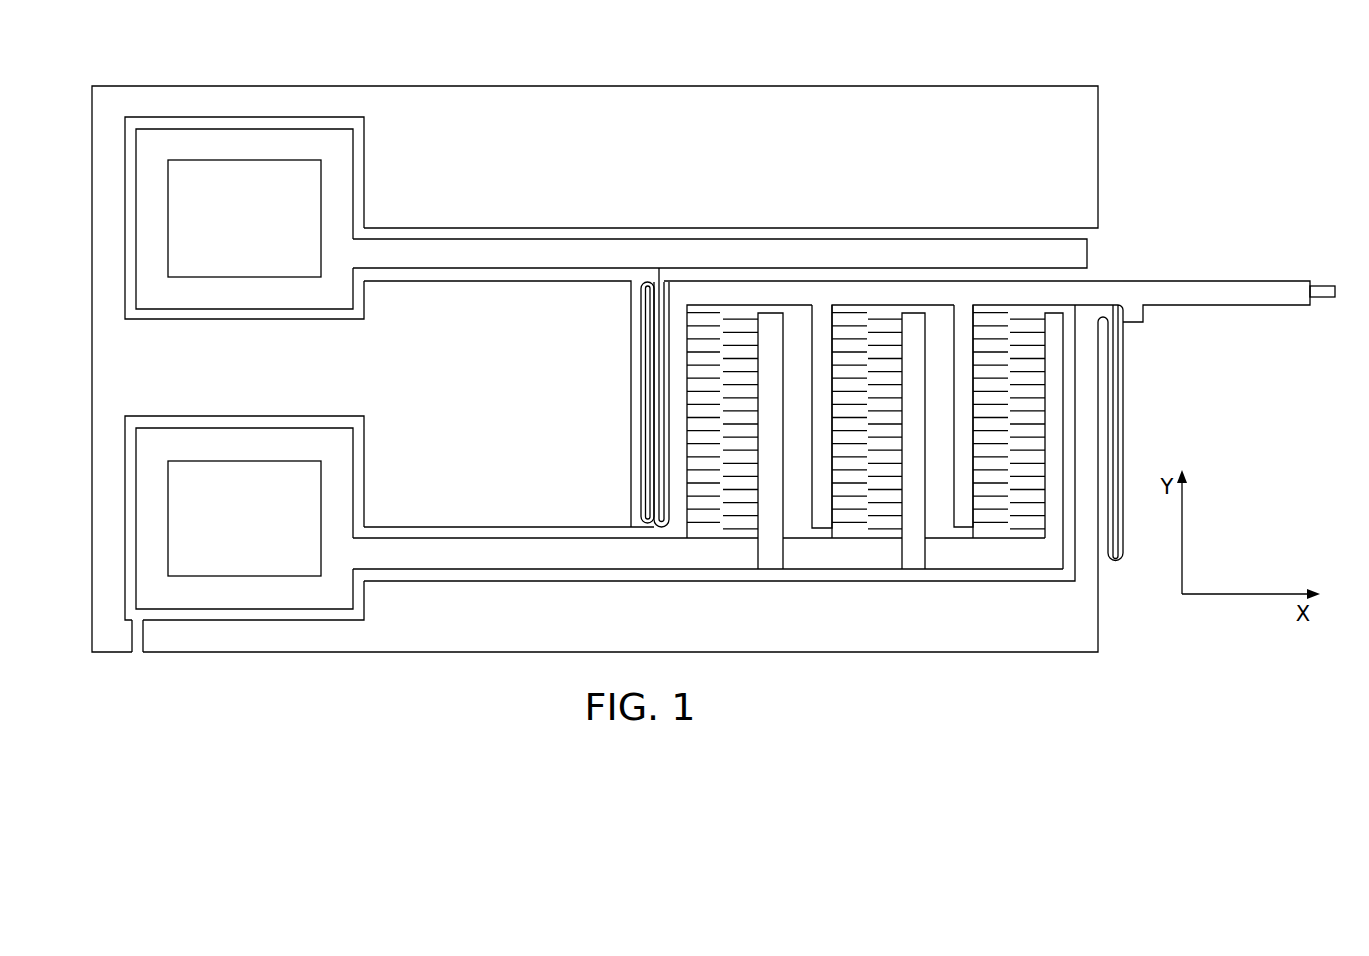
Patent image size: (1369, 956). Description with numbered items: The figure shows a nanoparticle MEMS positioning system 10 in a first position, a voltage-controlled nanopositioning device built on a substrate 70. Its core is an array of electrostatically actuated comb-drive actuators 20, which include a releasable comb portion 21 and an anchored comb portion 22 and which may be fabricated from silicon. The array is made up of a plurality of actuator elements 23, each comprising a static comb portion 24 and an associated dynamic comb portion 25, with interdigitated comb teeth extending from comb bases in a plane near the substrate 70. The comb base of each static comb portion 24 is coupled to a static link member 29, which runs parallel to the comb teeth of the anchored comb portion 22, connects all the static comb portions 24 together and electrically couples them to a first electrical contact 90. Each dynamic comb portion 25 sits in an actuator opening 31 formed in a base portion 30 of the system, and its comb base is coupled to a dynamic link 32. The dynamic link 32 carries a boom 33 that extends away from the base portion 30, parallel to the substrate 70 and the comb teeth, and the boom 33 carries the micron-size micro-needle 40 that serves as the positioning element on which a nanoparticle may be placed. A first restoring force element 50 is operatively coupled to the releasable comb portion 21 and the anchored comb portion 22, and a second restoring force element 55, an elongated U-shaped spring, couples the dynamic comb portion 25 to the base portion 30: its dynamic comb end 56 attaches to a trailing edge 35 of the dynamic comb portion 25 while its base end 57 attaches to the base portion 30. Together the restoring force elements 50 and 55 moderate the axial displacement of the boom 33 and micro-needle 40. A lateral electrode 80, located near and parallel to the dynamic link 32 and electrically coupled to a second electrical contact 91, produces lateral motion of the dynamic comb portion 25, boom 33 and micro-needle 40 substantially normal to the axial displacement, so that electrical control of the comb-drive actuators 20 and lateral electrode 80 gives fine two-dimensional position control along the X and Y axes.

The nanoparticle MEMS positioning system 10 is at (497, 36).
The second electrical contact 91 is at (258, 185).
The first electrical contact 90 is at (250, 555).
The lateral electrode 80 is at (905, 250).
The static link member 29 is at (497, 548).
The base portion 30 is at (495, 320).
The second restoring force element 55 is at (640, 345).
The base end 57 is at (640, 508).
The dynamic comb end 56 is at (669, 527).
The trailing edge 35 is at (673, 306).
The boom 33 is at (1172, 281).
The micro-needle 40 is at (1322, 286).
The first restoring force element 50 is at (1125, 407).
The substrate 70 is at (797, 510).
The dynamic link 32 is at (748, 298).
The actuator opening 31 is at (795, 325).
The comb-drive actuators 20 is at (923, 413).
The releasable comb portion 21 is at (708, 322).
The anchored comb portion 22 is at (743, 490).
The actuator elements 23 is at (993, 345).
The static comb portion 24 is at (1020, 400).
The dynamic comb portion 25 is at (985, 362).